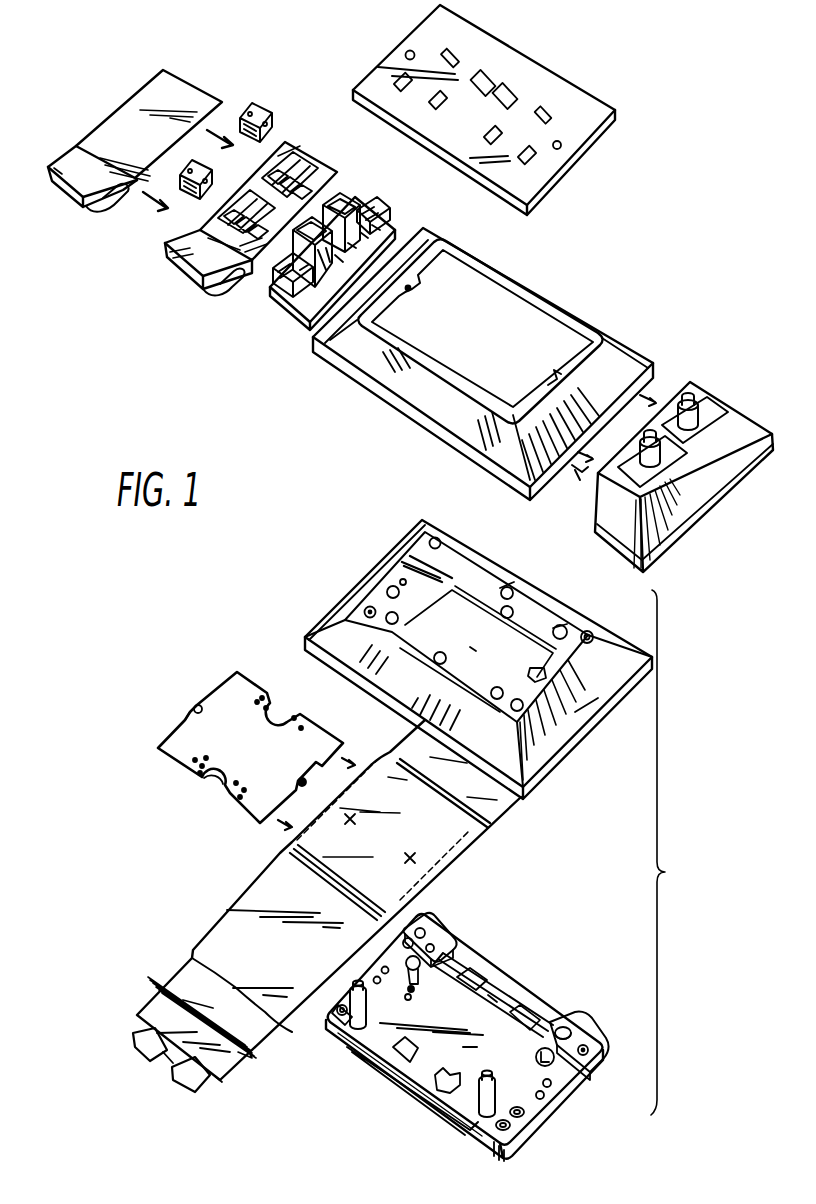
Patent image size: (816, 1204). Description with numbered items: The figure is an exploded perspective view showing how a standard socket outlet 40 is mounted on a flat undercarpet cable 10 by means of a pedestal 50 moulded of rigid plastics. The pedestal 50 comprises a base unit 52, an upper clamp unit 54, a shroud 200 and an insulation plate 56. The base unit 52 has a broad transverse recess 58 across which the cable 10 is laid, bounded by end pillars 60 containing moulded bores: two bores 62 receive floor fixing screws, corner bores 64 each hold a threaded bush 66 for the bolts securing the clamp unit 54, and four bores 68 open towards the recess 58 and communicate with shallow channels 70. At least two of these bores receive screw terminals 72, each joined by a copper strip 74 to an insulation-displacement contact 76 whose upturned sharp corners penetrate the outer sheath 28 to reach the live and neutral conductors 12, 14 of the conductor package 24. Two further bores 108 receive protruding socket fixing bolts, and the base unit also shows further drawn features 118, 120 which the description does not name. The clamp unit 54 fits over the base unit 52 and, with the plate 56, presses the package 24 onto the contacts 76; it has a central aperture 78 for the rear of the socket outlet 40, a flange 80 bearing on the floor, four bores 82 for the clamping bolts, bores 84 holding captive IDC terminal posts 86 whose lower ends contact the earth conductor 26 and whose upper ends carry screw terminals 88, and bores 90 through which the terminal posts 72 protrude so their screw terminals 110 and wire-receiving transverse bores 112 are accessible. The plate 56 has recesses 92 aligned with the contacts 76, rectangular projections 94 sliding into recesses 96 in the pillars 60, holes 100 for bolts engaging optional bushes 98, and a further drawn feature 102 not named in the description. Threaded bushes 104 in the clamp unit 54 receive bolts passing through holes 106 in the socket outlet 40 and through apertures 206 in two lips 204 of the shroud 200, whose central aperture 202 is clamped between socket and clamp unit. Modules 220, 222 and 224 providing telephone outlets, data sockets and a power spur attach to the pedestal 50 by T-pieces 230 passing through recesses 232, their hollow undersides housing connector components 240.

The cable 10 is at (219, 898).
The live conductor 12 is at (153, 1050).
The neutral conductor 14 is at (188, 1074).
The conductor package 24 is at (225, 1082).
The earth conductor 26 is at (247, 1050).
The outer sheath 28 is at (213, 933).
The socket outlet 40 is at (357, 77).
The pedestal 50 is at (671, 852).
The base unit 52 is at (517, 958).
The clamp unit 54 is at (327, 601).
The insulation plate 56 is at (277, 708).
The transverse recess 58 is at (500, 1000).
The end pillars 60 is at (450, 937).
The bores 62 is at (522, 1116).
The bores 64 is at (508, 1128).
The threaded bush 66 is at (348, 1018).
The bores 68 is at (571, 1030).
The shallow channels 70 is at (543, 1025).
The screw terminal 72 is at (460, 1105).
The copper strip 74 is at (458, 1105).
The insulation-displacement contact 76 is at (449, 1076).
The central aperture 78 is at (480, 638).
The flange 80 is at (585, 712).
The bores 82 is at (594, 637).
The bores 84 is at (513, 593).
The IDC terminal post 86 is at (507, 618).
The screw terminal 88 is at (445, 653).
The bores 90 is at (567, 629).
The bores or recesses 92 is at (238, 796).
The rectangular projections 94 is at (185, 712).
The recesses 96 is at (415, 989).
The threaded bushes 98 is at (412, 999).
The holes 100 is at (200, 704).
The notch 102 is at (212, 783).
The threaded bushes 104 is at (546, 672).
The holes 106 is at (408, 51).
The bores 108 is at (551, 1085).
The screw terminals 110 is at (491, 1072).
The wire-receiving transverse bores 112 is at (352, 1025).
The hole 118 is at (543, 1098).
The hole 120 is at (554, 1060).
The shroud 200 is at (620, 362).
The central aperture 202 is at (556, 314).
The lips 204 is at (398, 299).
The apertures 206 is at (414, 290).
The module 220 is at (287, 143).
The module 222 is at (187, 86).
The power spur module 224 is at (665, 530).
The T-pieces 230 is at (108, 206).
The recesses 232 is at (577, 474).
The connector components 240 is at (378, 210).